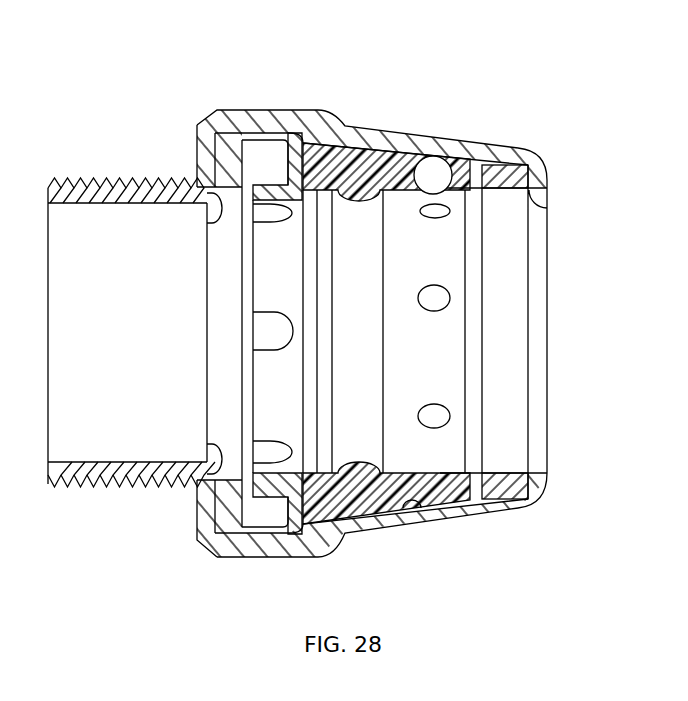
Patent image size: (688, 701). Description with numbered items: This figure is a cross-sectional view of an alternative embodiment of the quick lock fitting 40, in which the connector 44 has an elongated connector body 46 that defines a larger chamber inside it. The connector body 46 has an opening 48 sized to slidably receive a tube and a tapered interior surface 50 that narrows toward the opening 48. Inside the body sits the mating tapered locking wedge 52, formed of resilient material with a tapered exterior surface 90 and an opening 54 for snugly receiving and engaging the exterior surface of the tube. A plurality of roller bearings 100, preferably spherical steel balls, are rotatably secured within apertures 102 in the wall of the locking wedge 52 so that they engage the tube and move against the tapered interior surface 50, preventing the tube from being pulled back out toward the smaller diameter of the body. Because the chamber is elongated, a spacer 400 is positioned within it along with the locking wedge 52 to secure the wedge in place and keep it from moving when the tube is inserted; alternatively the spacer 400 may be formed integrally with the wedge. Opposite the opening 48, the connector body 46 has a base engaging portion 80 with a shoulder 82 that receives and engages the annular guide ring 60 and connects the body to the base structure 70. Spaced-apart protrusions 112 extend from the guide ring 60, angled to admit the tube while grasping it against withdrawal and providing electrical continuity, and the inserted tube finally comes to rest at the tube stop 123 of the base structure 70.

The fitting assembly 40 is at (480, 73).
The connector 44 is at (197, 101).
The connector body 46 is at (345, 122).
The opening 48 is at (540, 193).
The tapered interior surface 50 is at (358, 150).
The tapered locking wedge 52 is at (437, 503).
The opening 54 is at (481, 190).
The annular guide ring 60 is at (266, 528).
The base structure 70 is at (123, 183).
The base engaging portion 80 is at (257, 110).
The shoulder 82 is at (224, 142).
The tapered exterior surface 90 is at (382, 520).
The roller bearings 100 is at (450, 160).
The apertures 102 is at (438, 165).
The protrusions 112 is at (258, 273).
The tube stop 123 is at (212, 215).
The spacer 400 is at (520, 172).